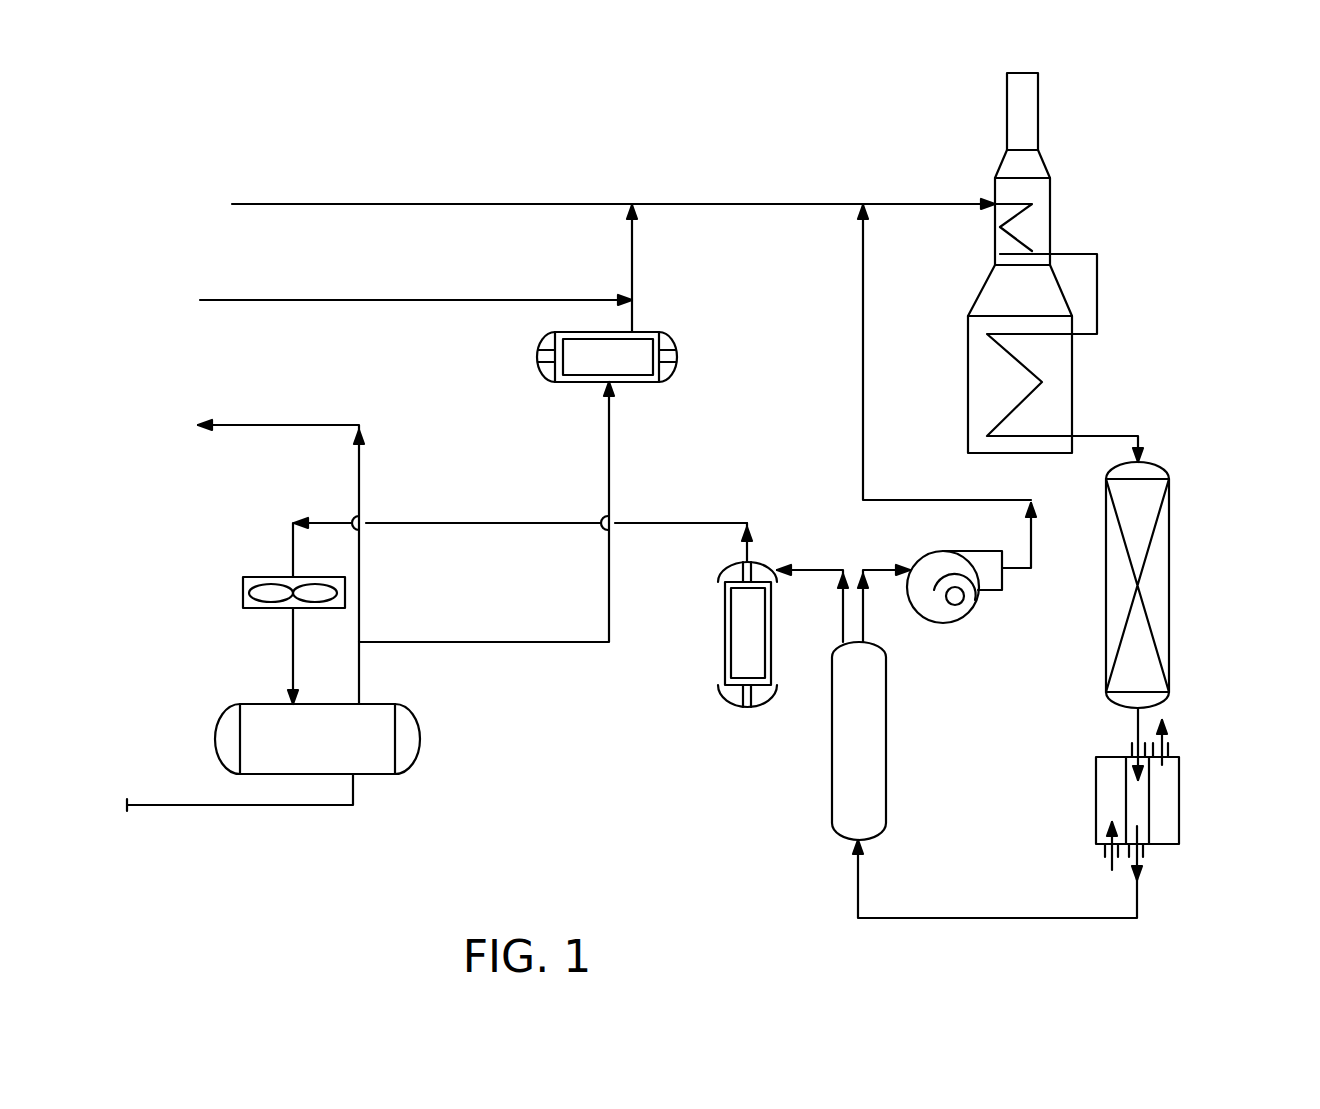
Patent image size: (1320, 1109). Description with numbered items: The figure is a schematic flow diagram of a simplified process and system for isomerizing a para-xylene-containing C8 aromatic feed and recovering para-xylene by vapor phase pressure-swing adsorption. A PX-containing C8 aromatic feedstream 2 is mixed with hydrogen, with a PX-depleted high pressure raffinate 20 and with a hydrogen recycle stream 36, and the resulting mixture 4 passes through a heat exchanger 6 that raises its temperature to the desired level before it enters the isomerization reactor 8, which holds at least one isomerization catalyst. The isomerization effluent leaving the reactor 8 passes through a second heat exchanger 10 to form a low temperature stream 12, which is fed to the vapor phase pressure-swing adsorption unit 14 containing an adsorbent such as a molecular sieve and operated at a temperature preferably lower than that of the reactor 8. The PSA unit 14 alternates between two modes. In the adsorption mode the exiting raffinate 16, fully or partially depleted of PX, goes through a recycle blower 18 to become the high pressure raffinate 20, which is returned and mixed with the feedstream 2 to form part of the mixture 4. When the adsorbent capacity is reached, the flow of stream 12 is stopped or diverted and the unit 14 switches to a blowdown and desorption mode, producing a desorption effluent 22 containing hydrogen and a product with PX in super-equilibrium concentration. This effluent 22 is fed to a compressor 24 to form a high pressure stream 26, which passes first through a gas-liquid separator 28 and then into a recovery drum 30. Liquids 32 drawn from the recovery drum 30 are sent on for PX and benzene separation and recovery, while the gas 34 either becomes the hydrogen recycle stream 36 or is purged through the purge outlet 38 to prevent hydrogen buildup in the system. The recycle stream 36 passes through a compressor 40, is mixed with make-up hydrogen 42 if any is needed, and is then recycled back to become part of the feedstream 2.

The C8 aromatic feedstream 2 is at (482, 203).
The mixture 4 is at (922, 203).
The heat exchanger 6 is at (1009, 305).
The isomerization reactor 8 is at (1172, 567).
The heat exchanger 10 is at (1181, 792).
The low temperature stream 12 is at (918, 916).
The pressure-swing adsorption unit 14 is at (886, 665).
The exiting raffinate 16 is at (876, 570).
The recycle blower 18 is at (976, 606).
The high pressure raffinate 20 is at (864, 428).
The desorption effluent 22 is at (800, 570).
The compressor 24 is at (722, 602).
The high pressure stream 26 is at (672, 523).
The gas-liquid separator 28 is at (322, 577).
The recovery drum 30 is at (298, 751).
The liquids 32 is at (220, 805).
The gas 34 is at (360, 664).
The hydrogen recycle stream 36 is at (512, 643).
The purge 38 is at (361, 464).
The compressor 40 is at (680, 356).
The make-up hydrogen 42 is at (505, 300).